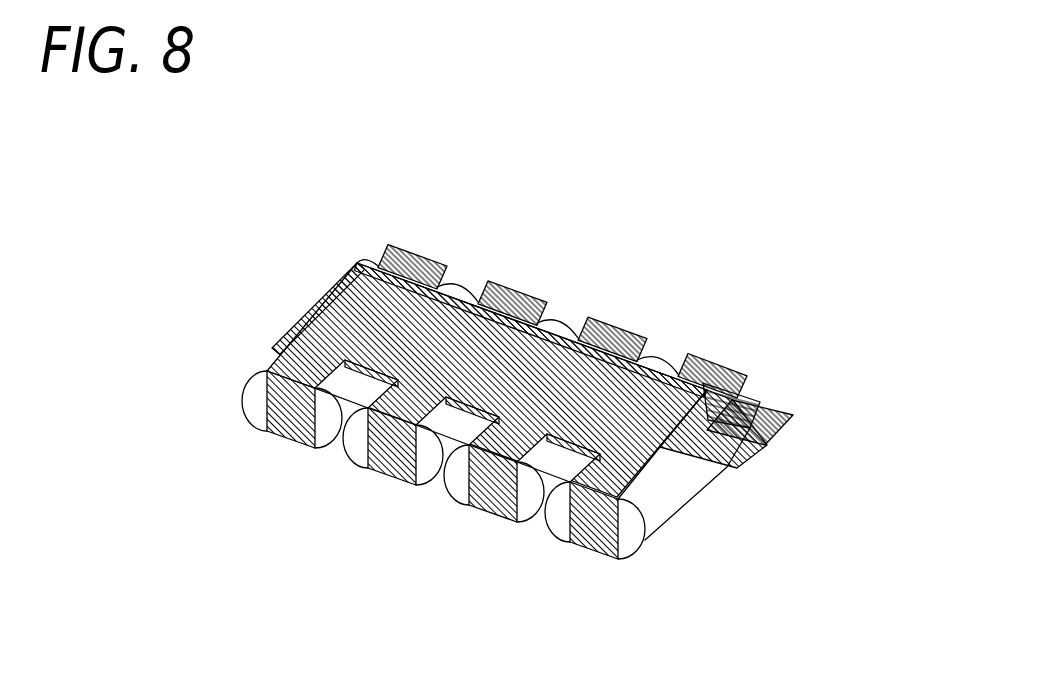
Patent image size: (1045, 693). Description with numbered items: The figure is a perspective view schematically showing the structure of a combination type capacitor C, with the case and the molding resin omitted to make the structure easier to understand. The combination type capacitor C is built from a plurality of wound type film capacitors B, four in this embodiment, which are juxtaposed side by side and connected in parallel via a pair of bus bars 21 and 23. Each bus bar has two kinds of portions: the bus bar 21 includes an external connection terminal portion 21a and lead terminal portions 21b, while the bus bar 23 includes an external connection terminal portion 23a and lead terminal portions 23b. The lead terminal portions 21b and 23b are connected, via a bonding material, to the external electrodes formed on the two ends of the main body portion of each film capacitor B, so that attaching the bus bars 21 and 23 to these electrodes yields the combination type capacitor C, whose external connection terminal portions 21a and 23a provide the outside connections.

The bus bar 21 is at (544, 470).
The external connection terminal portion 21a is at (743, 470).
The lead terminal portion 21b is at (618, 559).
The bus bar 23 is at (575, 288).
The external connection terminal portion 23a is at (773, 403).
The lead terminal portion 23b is at (697, 373).
The film capacitor B is at (318, 312).
The combination type capacitor C is at (543, 350).